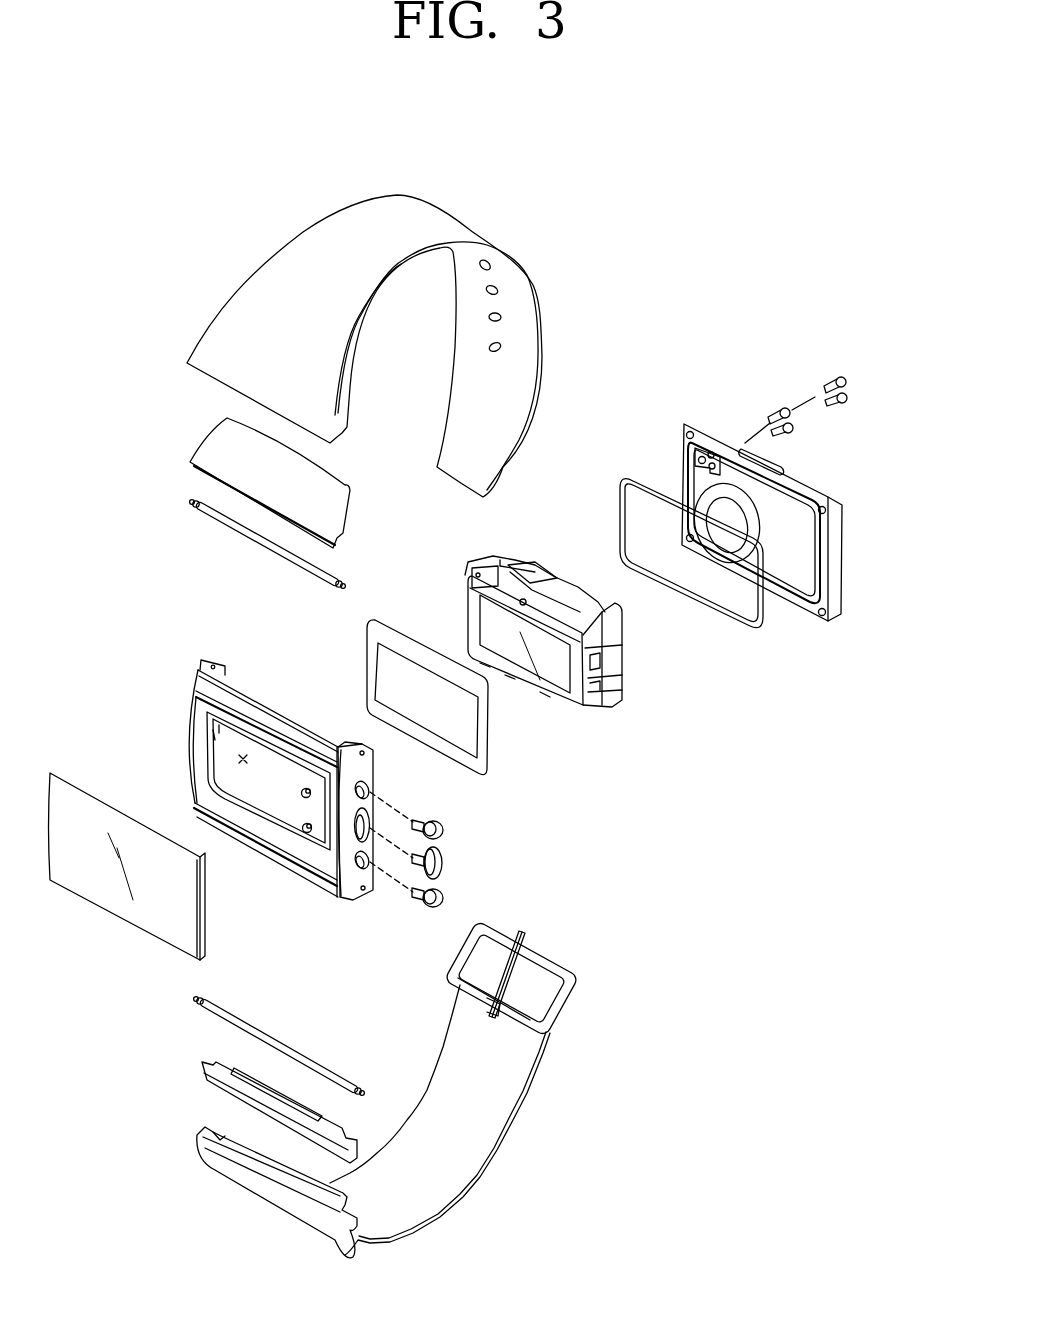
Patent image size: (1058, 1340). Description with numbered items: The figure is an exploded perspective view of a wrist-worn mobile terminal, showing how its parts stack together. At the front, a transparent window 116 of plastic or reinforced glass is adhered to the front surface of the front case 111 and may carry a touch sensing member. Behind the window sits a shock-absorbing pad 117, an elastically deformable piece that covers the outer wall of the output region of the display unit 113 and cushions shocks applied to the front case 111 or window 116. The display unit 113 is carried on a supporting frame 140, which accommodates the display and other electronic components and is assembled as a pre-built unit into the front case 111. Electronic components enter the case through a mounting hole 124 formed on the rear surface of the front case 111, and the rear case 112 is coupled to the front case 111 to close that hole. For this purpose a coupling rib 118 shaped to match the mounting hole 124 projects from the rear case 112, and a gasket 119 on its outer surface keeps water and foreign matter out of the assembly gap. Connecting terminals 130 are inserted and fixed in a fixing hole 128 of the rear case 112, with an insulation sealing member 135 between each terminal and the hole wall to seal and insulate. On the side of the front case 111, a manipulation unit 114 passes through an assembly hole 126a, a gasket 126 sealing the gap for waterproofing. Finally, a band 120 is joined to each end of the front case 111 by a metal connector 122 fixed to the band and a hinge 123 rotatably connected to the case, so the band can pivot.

The front case 111 is at (210, 683).
The rear case 112 is at (837, 543).
The display unit 113 is at (557, 675).
The manipulation unit 114 is at (442, 898).
The window 116 is at (93, 883).
The shock-absorbing pad 117 is at (488, 745).
The coupling rib 118 is at (757, 535).
The gasket 119 is at (725, 640).
The band 120 is at (280, 268).
The connector 122 is at (217, 447).
The hinge 123 is at (220, 521).
The mounting hole 124 is at (243, 759).
The gasket 126 is at (305, 832).
The button holes 126a is at (360, 855).
The fixing hole 128 is at (682, 448).
The connecting terminals 130 is at (818, 388).
The insulation sealing member 135 is at (779, 402).
The supporting frame 140 is at (552, 578).